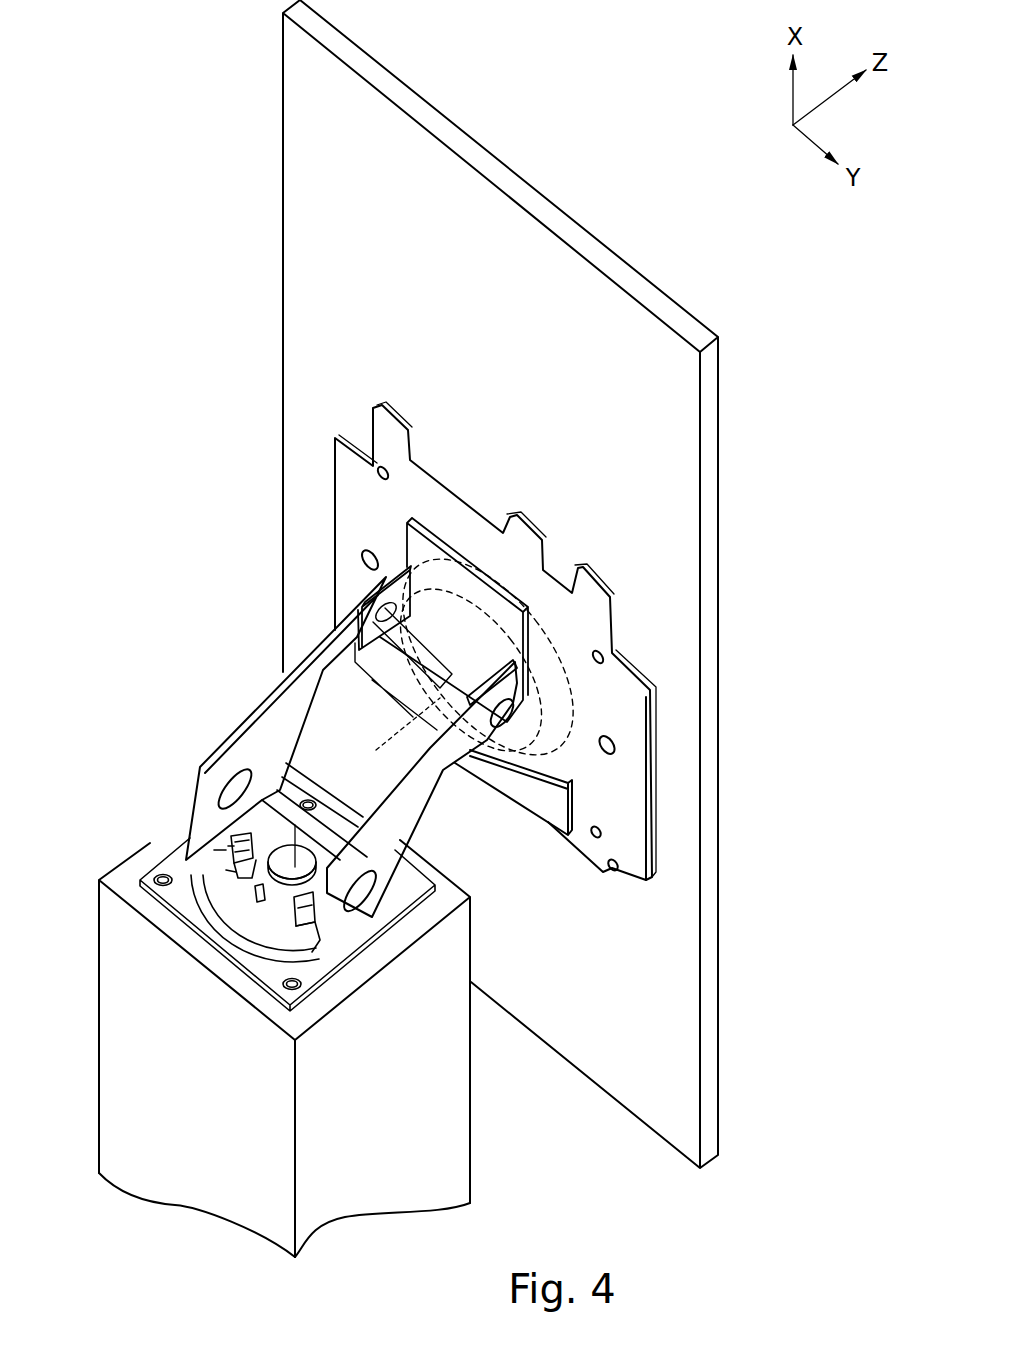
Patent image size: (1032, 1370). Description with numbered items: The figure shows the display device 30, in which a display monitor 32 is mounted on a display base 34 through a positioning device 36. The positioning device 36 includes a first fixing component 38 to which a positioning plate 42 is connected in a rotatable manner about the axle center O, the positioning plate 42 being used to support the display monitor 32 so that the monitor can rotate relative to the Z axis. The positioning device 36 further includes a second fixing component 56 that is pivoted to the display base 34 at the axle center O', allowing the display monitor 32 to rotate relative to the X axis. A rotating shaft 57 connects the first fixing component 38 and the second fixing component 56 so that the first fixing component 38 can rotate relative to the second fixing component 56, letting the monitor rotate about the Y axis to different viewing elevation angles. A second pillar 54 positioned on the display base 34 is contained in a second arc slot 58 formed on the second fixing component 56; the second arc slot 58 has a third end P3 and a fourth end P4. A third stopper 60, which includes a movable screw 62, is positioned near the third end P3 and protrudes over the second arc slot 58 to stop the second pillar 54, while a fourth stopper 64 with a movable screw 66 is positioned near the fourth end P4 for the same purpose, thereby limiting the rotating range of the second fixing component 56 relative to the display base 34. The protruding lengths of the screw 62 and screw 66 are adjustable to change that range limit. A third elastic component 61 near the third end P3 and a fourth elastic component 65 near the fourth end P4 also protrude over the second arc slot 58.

The display device 30 is at (412, 628).
The display monitor 32 is at (551, 220).
The display base 34 is at (478, 1083).
The positioning device 36 is at (298, 712).
The first fixing component 38 is at (432, 545).
The positioning plate 42 is at (432, 470).
The second pillar 54 is at (267, 960).
The second fixing component 56 is at (277, 810).
The rotating shaft 57 is at (383, 620).
The second arc slot 58 is at (255, 968).
The third stopper 60 is at (300, 915).
The third elastic component 61 is at (303, 935).
The screw 62 is at (314, 958).
The fourth stopper 64 is at (237, 863).
The fourth elastic component 65 is at (220, 870).
The screw 66 is at (250, 862).
The third end P3 is at (300, 955).
The fourth end P4 is at (218, 845).